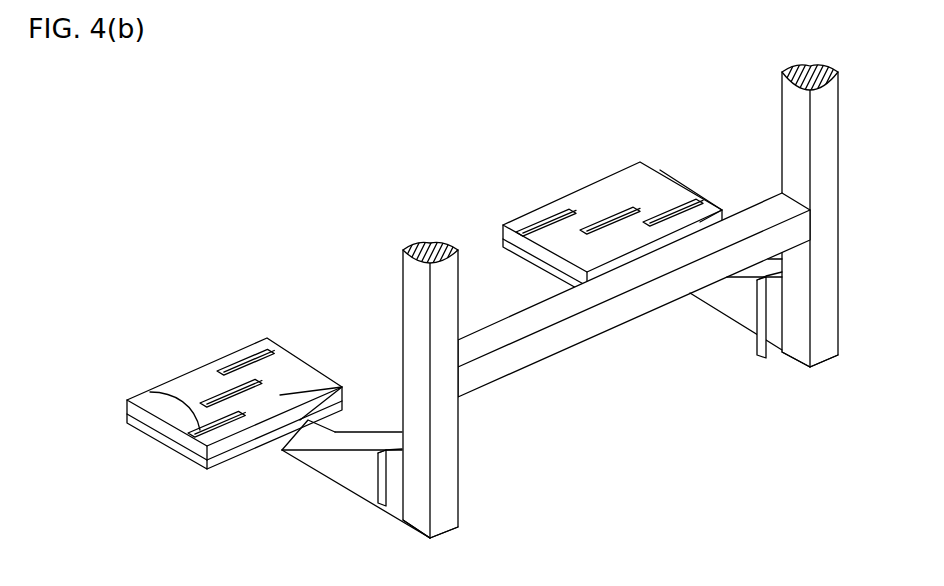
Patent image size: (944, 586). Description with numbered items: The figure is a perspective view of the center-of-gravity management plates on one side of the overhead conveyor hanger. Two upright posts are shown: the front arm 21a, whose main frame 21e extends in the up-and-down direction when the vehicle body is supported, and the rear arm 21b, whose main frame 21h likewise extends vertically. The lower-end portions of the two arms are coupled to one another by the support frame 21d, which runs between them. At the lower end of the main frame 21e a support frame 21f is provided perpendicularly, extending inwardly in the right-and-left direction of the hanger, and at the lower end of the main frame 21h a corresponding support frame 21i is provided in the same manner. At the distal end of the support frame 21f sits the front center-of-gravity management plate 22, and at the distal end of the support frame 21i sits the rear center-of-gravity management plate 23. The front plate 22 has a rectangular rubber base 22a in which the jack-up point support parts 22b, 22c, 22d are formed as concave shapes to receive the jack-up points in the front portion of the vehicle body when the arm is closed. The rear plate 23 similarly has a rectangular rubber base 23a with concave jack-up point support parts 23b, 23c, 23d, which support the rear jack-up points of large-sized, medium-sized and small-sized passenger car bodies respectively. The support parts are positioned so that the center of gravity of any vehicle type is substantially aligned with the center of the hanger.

The front arm 21a is at (427, 243).
The rear arm 21b is at (815, 71).
The support frame 21d is at (541, 345).
The main frame 21e is at (440, 520).
The support frame 21f is at (353, 480).
The main frame 21h is at (820, 347).
The support frame 21i is at (737, 308).
The front center-of-gravity management plate 22 is at (243, 373).
The base 22a is at (307, 385).
The jack-up point support part 22b is at (150, 392).
The jack-up point support part 22c is at (223, 395).
The jack-up point support part 22d is at (243, 360).
The rear center-of-gravity management plate 23 is at (612, 194).
The base 23a is at (677, 197).
The jack-up point support part 23b is at (667, 215).
The jack-up point support part 23c is at (613, 217).
The jack-up point support part 23d is at (537, 223).